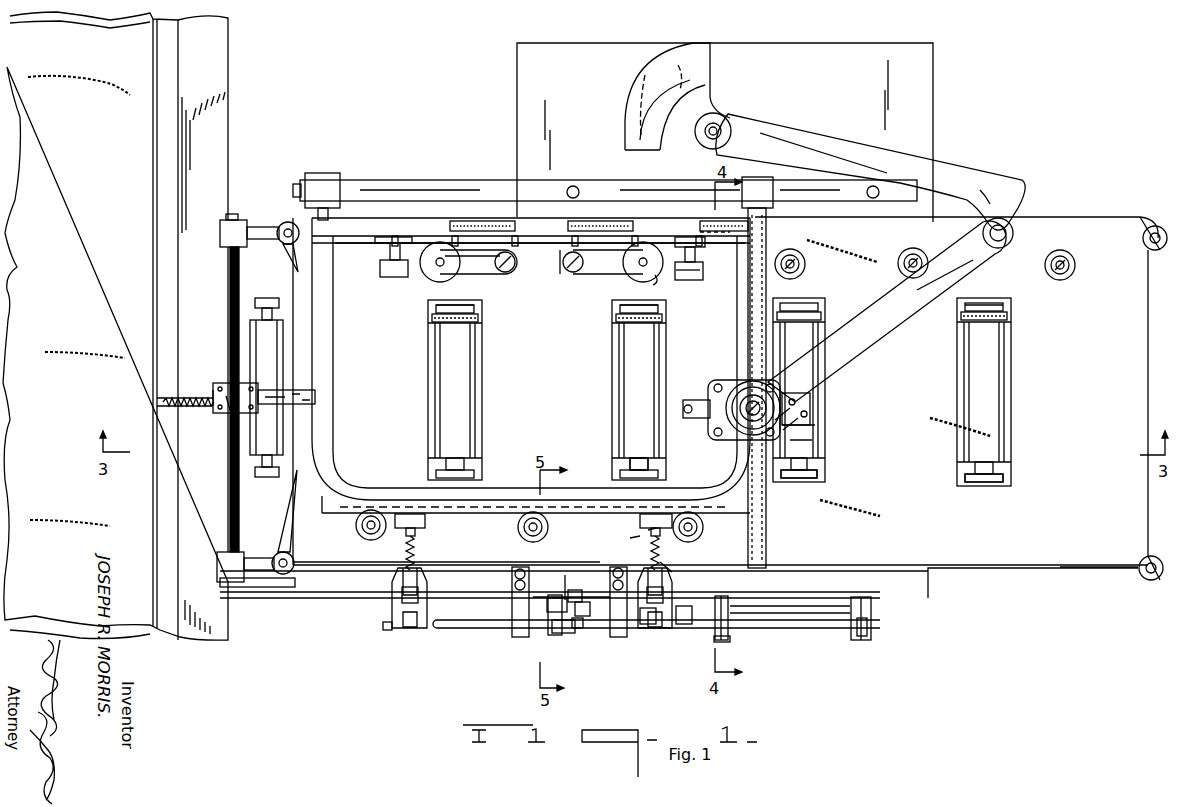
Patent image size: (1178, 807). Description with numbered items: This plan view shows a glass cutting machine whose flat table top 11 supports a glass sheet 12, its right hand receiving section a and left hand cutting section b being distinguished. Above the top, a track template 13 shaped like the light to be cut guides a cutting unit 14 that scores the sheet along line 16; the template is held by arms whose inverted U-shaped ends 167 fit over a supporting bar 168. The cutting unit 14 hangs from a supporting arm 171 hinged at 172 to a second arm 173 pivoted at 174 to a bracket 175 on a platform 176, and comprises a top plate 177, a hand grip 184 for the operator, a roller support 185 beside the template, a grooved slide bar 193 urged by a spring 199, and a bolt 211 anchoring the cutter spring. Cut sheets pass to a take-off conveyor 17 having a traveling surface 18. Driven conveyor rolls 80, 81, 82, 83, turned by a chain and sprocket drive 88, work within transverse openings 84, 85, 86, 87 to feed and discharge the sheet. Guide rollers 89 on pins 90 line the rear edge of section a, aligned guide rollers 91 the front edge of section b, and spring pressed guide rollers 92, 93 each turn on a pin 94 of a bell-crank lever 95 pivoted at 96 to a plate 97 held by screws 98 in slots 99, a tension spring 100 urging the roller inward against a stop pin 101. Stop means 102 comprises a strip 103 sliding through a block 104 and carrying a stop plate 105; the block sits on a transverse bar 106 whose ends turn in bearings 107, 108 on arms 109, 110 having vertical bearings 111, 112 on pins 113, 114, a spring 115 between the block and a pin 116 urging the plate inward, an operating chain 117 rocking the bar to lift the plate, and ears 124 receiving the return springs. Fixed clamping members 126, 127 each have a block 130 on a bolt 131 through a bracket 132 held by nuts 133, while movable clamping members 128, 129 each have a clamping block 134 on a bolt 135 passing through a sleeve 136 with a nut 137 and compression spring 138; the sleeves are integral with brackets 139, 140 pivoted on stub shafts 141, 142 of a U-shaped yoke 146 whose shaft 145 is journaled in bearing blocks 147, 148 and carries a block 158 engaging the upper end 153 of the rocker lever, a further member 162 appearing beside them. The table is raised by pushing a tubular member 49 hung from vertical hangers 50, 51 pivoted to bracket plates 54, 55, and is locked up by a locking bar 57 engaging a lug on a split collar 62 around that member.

The table top 11 is at (950, 567).
The sheet of glass 12 is at (328, 476).
The track template 13 is at (468, 516).
The cutting unit 14 is at (798, 382).
The line 16 is at (748, 305).
The take-off conveyor 17 is at (215, 55).
The traveling surface 18 is at (135, 290).
The tubular member 49 is at (776, 636).
The vertical hanger 50 is at (571, 635).
The vertical hanger 51 is at (860, 640).
The bracket plate 54 is at (575, 576).
The bracket plate 55 is at (868, 612).
The locking bar 57 is at (730, 606).
The split collar 62 is at (736, 640).
The conveyor roll 80 is at (1000, 346).
The conveyor roll 81 is at (816, 432).
The conveyor roll 82 is at (625, 370).
The conveyor roll 83 is at (470, 372).
The transverse opening 84 is at (1002, 478).
The transverse opening 85 is at (812, 476).
The transverse opening 86 is at (615, 470).
The transverse opening 87 is at (430, 312).
The chain and sprocket drive 88 is at (618, 316).
The guide rollers 89 is at (1075, 266).
The pins 90 is at (1060, 254).
The guide rollers 91 is at (528, 532).
The guide roller 92 is at (432, 272).
The guide roller 93 is at (660, 276).
The pin 94 is at (640, 276).
The bell-crank lever 95 is at (573, 278).
The pivot 96 is at (512, 266).
The plate 97 is at (520, 254).
The screws 98 is at (596, 274).
The slots 99 is at (626, 222).
The tension spring 100 is at (575, 222).
The stop pin 101 is at (570, 240).
The stop means 102 is at (222, 383).
The horizontal strip 103 is at (190, 395).
The block 104 is at (255, 420).
The stop plate 105 is at (318, 396).
The transverse bar 106 is at (240, 282).
The horizontal bearing 107 is at (222, 232).
The horizontal bearing 108 is at (222, 562).
The arm 109 is at (258, 230).
The arm 110 is at (256, 572).
The vertical bearing 111 is at (280, 222).
The vertical bearing 112 is at (296, 570).
The vertical pin 113 is at (280, 242).
The vertical pin 114 is at (282, 555).
The spring 115 is at (215, 410).
The pin 116 is at (158, 402).
The operating chain 117 is at (272, 596).
The ears 124 is at (268, 590).
The clamping member 126 is at (380, 262).
The clamping member 127 is at (703, 270).
The clamping member 128 is at (418, 558).
The clamping member 129 is at (672, 570).
The block 130 is at (392, 280).
The bolt 131 is at (698, 258).
The bracket 132 is at (665, 226).
The nuts 133 is at (705, 242).
The clamping block 134 is at (407, 514).
The bolt 135 is at (650, 538).
The sleeve 136 is at (402, 566).
The nut 137 is at (668, 598).
The compression spring 138 is at (658, 548).
The bracket 139 is at (392, 609).
The bracket 140 is at (681, 634).
The stub shaft 141 is at (406, 634).
The stub shaft 142 is at (646, 634).
The horizontal shaft 145 is at (604, 636).
The U-shaped yoke 146 is at (462, 634).
The bearing block 147 is at (512, 612).
The bearing block 148 is at (582, 598).
The upper end portion 153 is at (554, 598).
The block 158 is at (558, 633).
The block 162 is at (545, 632).
The inverted U-shaped ends 167 is at (330, 178).
The horizontal supporting bar 168 is at (425, 186).
The horizontal supporting arm 171 is at (872, 334).
The hinge 172 is at (1000, 250).
The second horizontal arm 173 is at (842, 146).
The pivot 174 is at (722, 125).
The bracket 175 is at (632, 114).
The platform 176 is at (920, 72).
The top plate 177 is at (716, 436).
The hand grip 184 is at (738, 386).
The roller support 185 is at (692, 400).
The slide bar 193 is at (812, 400).
The spring 199 is at (808, 442).
The bolt 211 is at (686, 414).
The receiving section a is at (1080, 567).
The cutting section b is at (340, 565).